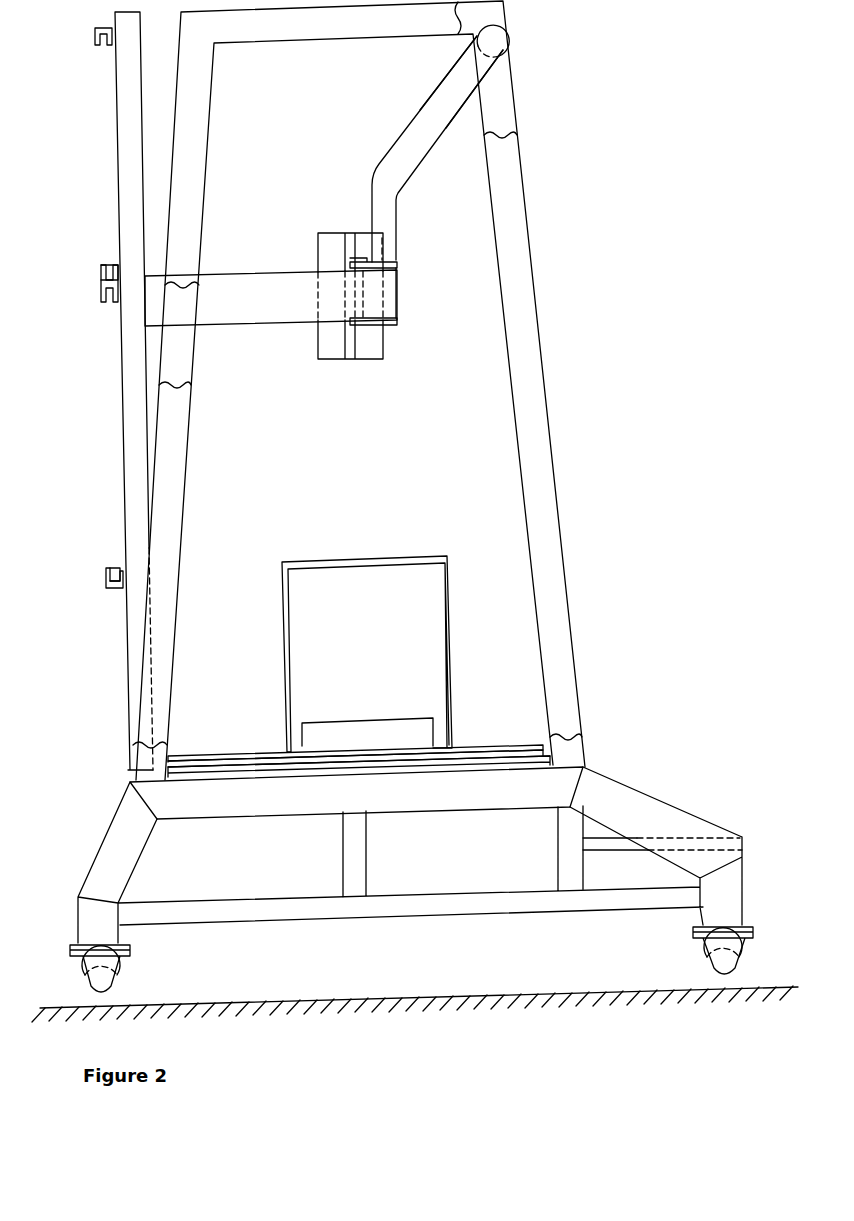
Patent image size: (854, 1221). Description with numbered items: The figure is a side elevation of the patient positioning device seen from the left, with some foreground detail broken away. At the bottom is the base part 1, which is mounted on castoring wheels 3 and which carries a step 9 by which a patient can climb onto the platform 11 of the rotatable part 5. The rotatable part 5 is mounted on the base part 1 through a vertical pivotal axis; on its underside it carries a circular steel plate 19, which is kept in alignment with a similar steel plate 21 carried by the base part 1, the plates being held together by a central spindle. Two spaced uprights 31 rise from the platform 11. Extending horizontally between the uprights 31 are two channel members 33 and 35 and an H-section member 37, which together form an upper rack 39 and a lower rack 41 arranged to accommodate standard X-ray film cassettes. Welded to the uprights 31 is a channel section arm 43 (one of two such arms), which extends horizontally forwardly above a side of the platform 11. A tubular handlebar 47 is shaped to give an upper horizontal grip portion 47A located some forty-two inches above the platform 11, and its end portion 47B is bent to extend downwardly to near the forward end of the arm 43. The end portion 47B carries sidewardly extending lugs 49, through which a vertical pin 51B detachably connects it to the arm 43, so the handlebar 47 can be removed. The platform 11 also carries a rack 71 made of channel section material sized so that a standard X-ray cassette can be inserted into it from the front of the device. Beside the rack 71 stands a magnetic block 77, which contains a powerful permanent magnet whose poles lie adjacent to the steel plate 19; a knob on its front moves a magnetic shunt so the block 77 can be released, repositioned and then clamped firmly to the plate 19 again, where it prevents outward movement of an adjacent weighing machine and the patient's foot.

The base part 1 is at (402, 855).
The castoring wheels 3 is at (88, 990).
The rotatable part 5 is at (508, 753).
The step 9 is at (745, 838).
The platform 11 is at (203, 755).
The circular steel plate 19 is at (244, 764).
The steel plate 21 is at (207, 777).
The uprights 31 is at (128, 118).
The channel member 33 is at (95, 40).
The channel member 35 is at (106, 584).
The H-section member 37 is at (101, 295).
The upper rack 39 is at (116, 262).
The lower rack 41 is at (121, 572).
The channel section arm 43 is at (254, 307).
The tubular handlebar 47 is at (432, 143).
The upper horizontal grip portion 47A is at (500, 41).
The end portion 47B is at (452, 96).
The lugs 49 is at (383, 263).
The vertical pin 51B is at (360, 312).
The rack 71 is at (410, 560).
The magnetic block 77 is at (418, 730).